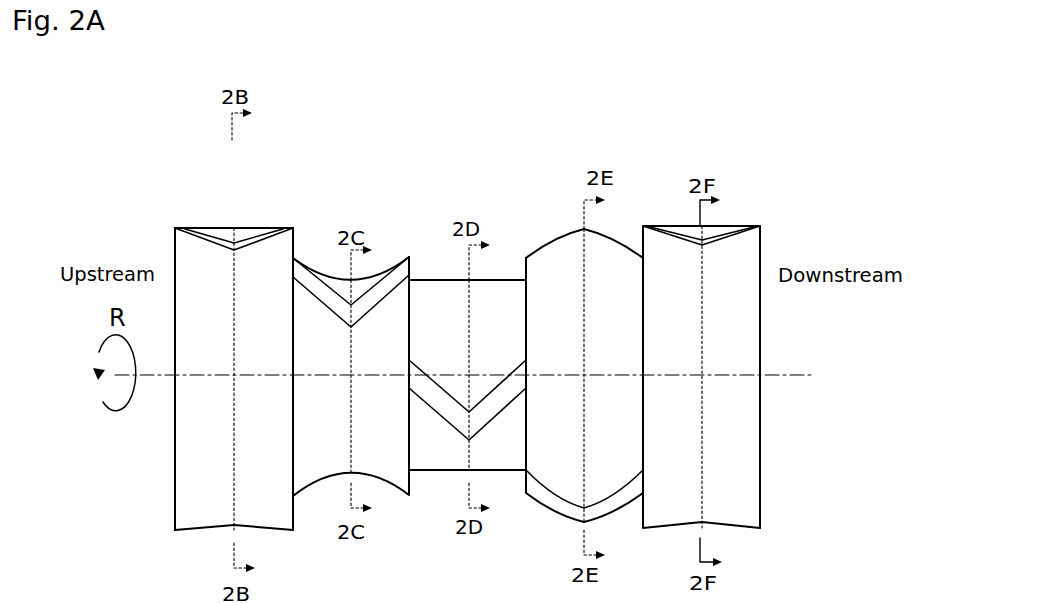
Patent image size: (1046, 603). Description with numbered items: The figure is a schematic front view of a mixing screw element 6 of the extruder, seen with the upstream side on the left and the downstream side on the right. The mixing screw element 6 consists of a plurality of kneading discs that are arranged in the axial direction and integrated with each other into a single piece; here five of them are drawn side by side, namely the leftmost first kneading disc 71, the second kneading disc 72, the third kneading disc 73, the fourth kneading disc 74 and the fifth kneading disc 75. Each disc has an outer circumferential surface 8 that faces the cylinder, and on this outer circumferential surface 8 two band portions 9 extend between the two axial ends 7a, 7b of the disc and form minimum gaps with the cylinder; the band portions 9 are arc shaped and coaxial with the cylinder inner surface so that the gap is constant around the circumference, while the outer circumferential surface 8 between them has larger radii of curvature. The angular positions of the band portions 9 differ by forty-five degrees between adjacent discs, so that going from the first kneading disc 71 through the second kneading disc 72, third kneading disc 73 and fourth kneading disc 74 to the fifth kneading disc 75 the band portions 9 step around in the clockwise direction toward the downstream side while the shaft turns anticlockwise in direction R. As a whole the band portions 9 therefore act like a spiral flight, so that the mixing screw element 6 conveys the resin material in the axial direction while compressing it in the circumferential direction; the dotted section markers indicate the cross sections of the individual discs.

The mixing screw element 6 is at (466, 148).
The end of kneading disc 7a is at (172, 247).
The end of kneading disc 7b is at (296, 243).
The outer circumferential surface 8 is at (212, 228).
The band portion 9 is at (242, 229).
The first kneading disc 71 is at (267, 216).
The second kneading disc 72 is at (375, 256).
The third kneading disc 73 is at (491, 256).
The fourth kneading disc 74 is at (577, 206).
The fifth kneading disc 75 is at (679, 208).